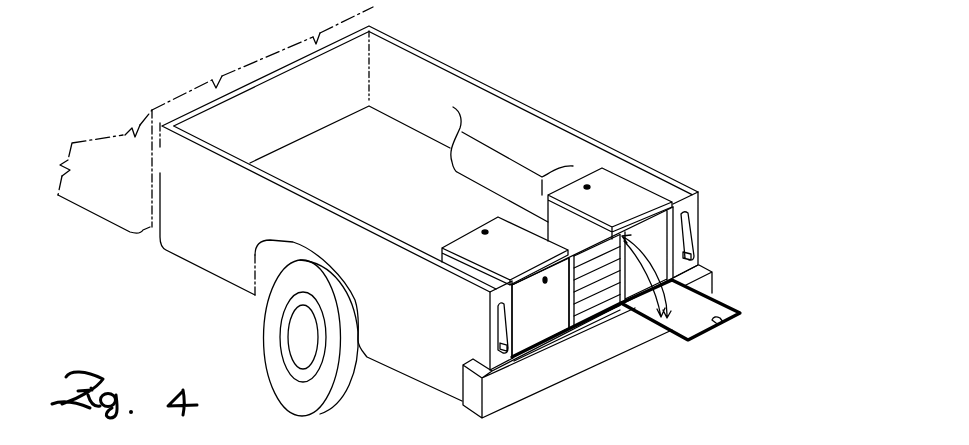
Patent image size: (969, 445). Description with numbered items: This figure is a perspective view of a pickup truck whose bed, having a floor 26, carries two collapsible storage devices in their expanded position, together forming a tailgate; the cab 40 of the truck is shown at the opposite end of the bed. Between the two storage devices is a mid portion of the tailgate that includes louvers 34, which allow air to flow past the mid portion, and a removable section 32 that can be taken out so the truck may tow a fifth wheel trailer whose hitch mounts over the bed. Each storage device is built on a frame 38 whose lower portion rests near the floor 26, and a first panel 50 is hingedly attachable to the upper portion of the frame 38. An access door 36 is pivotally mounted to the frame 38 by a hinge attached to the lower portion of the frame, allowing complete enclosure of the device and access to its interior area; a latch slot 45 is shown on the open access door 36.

The floor 26 is at (387, 180).
The removable section 32 is at (550, 237).
The louvers 34 is at (593, 290).
The access door 36 is at (565, 322).
The frame 38 is at (655, 235).
The cab 40 is at (97, 217).
The door latch slot 45 is at (722, 322).
The first panel 50 is at (514, 253).